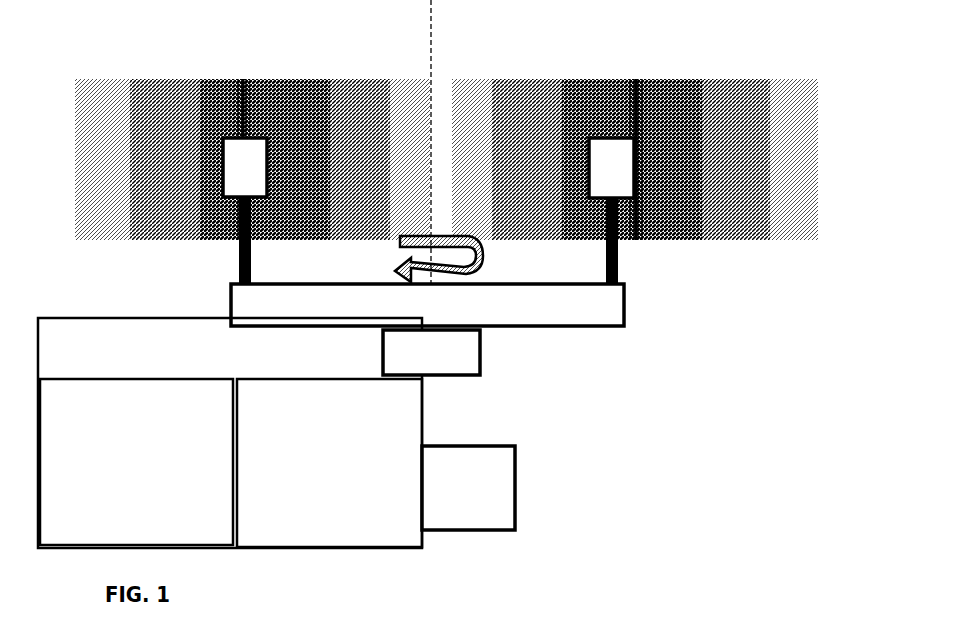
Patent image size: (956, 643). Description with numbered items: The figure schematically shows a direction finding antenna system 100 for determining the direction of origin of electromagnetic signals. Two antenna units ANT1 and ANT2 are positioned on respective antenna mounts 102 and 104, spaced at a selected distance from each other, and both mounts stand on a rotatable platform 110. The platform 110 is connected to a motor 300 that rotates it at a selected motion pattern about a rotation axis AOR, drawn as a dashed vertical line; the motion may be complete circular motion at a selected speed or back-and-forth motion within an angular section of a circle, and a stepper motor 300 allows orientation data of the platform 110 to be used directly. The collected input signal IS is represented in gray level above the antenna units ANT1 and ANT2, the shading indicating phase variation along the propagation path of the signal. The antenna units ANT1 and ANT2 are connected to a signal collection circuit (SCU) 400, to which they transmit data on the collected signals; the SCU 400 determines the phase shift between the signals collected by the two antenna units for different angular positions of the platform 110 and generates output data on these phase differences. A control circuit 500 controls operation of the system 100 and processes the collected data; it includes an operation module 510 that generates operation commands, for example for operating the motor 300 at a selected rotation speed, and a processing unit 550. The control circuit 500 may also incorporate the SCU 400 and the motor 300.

The direction finding antenna system 100 is at (428, 274).
The antenna mount 102 is at (196, 225).
The antenna mount 104 is at (657, 225).
The rotatable platform 110 is at (427, 305).
The motor 300 is at (431, 352).
The signal collection circuit 400 is at (468, 488).
The control circuit 500 is at (230, 433).
The operation module 510 is at (329, 463).
The processing unit 550 is at (136, 462).
The antenna unit ANT1 is at (231, 181).
The antenna unit ANT2 is at (624, 181).
The rotation axis AOR is at (430, 66).
The input signal IS is at (642, 83).